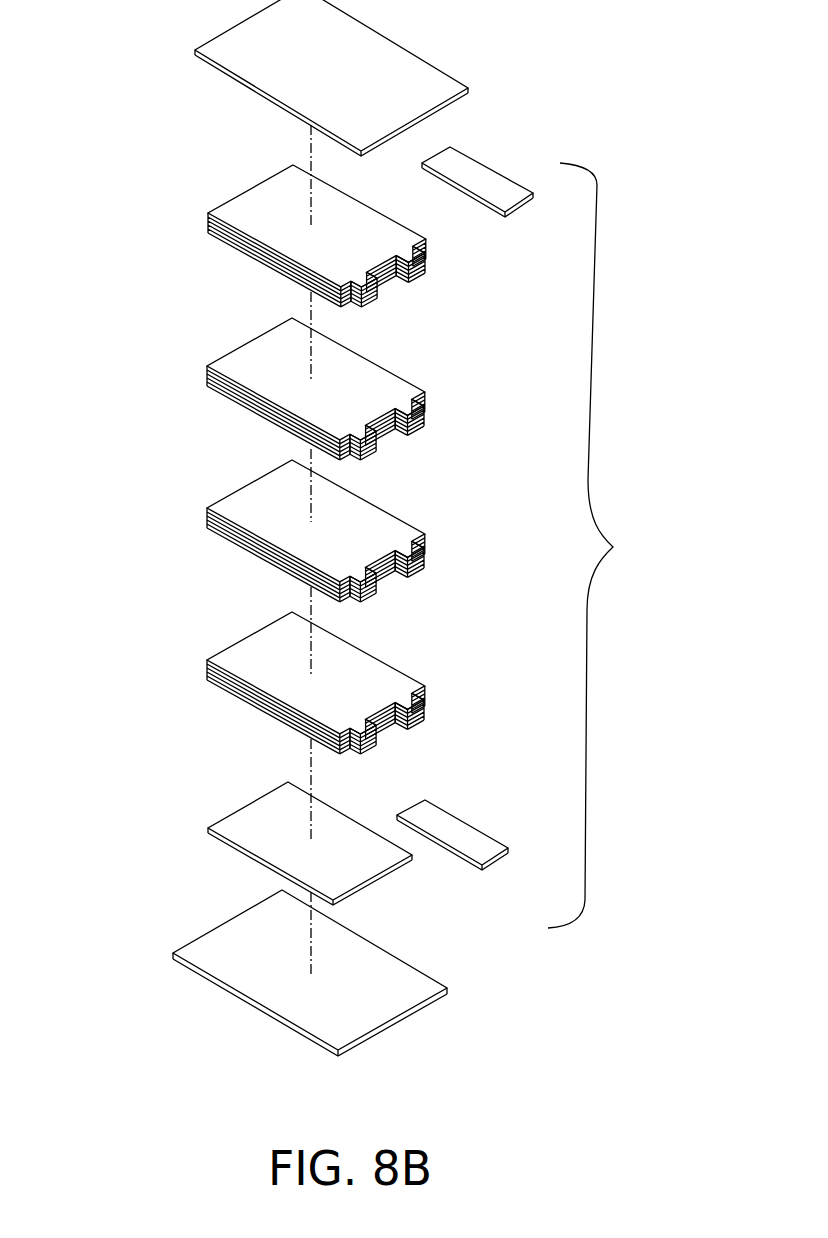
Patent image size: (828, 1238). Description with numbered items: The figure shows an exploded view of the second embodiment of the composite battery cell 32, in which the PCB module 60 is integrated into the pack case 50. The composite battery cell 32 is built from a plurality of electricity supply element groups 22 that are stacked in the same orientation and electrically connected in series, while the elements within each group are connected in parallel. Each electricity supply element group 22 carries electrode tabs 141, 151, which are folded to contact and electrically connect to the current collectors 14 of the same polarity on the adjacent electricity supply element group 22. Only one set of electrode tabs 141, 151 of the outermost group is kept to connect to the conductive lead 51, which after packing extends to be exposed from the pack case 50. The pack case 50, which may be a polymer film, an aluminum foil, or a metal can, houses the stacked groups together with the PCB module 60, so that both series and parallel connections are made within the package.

The current collector 14 is at (350, 208).
The electricity supply element group 22 is at (331, 472).
The composite battery cell 32 is at (605, 545).
The pack case 50 is at (248, 20).
The conductive lead 51 is at (492, 173).
The PCB module 60 is at (242, 807).
The electrode tab 141 is at (412, 268).
The electrode tab 151 is at (368, 298).